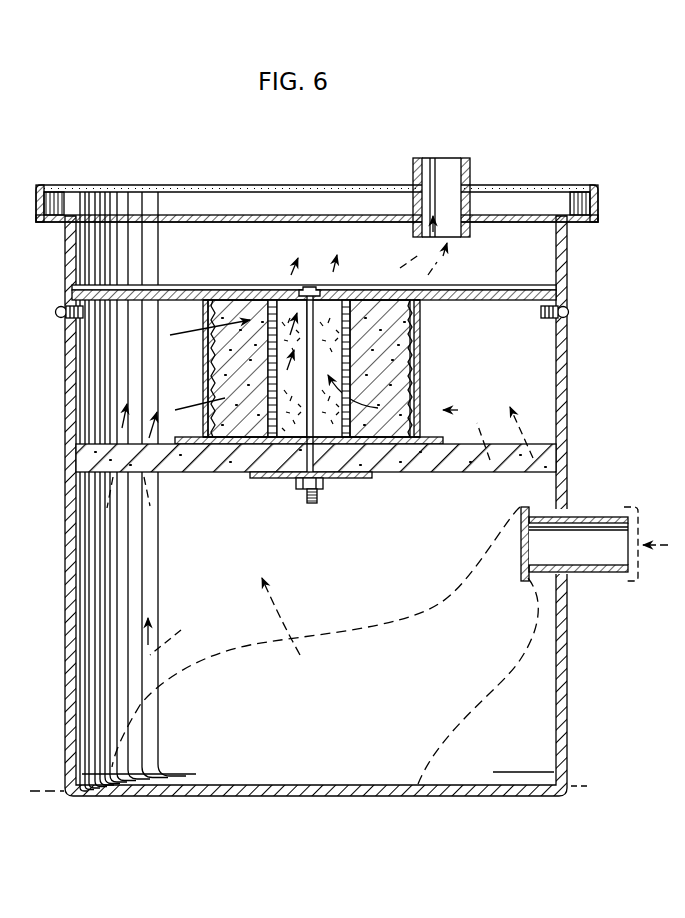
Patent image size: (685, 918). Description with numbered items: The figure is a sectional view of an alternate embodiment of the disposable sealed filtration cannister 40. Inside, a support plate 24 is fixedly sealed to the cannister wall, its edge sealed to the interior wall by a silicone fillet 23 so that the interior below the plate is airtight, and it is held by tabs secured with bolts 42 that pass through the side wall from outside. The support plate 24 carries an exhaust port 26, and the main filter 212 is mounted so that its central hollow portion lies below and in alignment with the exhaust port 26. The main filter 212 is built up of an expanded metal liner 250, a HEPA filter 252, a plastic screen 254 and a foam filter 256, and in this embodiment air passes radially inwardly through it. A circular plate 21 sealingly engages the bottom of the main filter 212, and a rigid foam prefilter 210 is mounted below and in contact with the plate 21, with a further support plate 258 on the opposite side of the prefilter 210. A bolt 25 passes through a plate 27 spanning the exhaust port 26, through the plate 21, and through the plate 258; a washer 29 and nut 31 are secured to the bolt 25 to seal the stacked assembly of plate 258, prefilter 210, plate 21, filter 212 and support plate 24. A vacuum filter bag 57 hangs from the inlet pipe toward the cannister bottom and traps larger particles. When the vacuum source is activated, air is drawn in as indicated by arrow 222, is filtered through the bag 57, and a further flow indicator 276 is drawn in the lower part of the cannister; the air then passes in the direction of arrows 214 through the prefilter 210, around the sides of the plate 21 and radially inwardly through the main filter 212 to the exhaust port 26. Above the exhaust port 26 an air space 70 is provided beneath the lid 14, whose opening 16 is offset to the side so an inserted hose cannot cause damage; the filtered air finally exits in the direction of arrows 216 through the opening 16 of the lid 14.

The air space 70 is at (150, 440).
The cannister lid 14 is at (272, 186).
The opening 16 is at (446, 165).
The support plate 24 is at (507, 290).
The silicone fillet 23 is at (563, 284).
The bolts 42 is at (568, 314).
The bolt 25 is at (270, 303).
The arrows 216 is at (288, 303).
The plate 27 is at (318, 300).
The exhaust port 26 is at (344, 303).
The plastic screen 254 is at (420, 318).
The foam filter 256 is at (420, 344).
The main filter 212 is at (424, 380).
The plate 21 is at (448, 437).
The rigid foam prefilter 210 is at (547, 453).
The HEPA filter 252 is at (221, 352).
The expanded metal liner 250 is at (221, 380).
The arrows 214 is at (110, 432).
The support plate 258 is at (357, 478).
The nut 31 is at (302, 486).
The washer 29 is at (325, 482).
The flow path 276 is at (224, 616).
The arrow 222 is at (668, 548).
The sealed filtration cannister 40 is at (572, 655).
The vacuum filter bag 57 is at (462, 722).